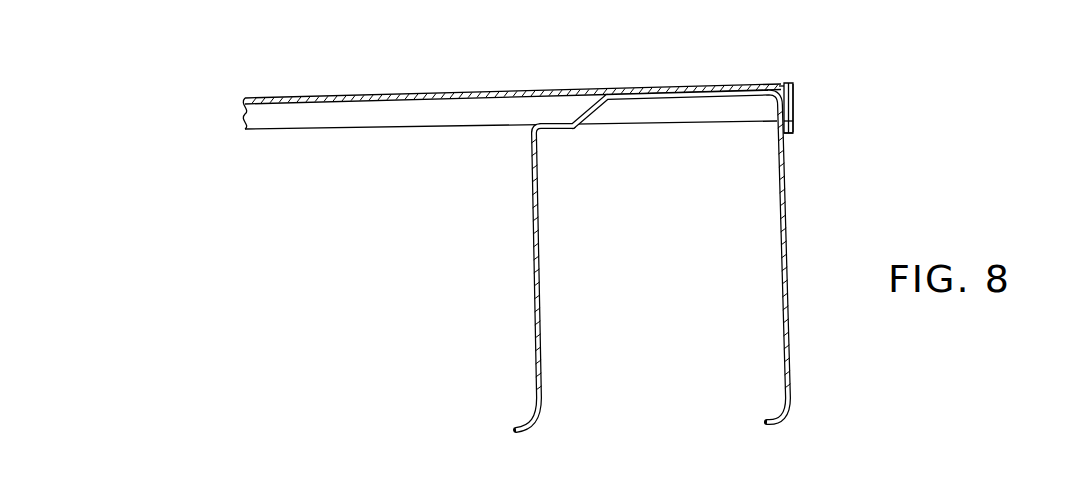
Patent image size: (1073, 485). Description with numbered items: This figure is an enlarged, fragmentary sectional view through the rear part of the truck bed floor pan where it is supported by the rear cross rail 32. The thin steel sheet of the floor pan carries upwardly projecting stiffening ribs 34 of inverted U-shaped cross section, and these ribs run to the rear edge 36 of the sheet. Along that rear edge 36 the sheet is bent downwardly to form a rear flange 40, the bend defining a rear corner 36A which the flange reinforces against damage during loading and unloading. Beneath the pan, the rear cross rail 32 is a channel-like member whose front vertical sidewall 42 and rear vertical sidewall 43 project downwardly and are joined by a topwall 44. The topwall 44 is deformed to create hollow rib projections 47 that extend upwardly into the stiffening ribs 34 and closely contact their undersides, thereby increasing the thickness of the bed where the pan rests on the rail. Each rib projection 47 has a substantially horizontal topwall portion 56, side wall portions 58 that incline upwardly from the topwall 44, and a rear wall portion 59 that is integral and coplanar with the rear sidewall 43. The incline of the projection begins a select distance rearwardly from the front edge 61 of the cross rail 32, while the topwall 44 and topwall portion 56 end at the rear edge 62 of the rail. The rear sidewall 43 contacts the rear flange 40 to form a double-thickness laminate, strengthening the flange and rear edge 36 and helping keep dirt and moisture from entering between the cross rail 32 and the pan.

The rear cross rail 32 is at (788, 217).
The stiffening ribs 34 is at (383, 94).
The rear edge 36 is at (785, 83).
The rear corner 36A is at (793, 88).
The rear flange 40 is at (793, 131).
The front vertical sidewall 42 is at (532, 283).
The rear vertical sidewall 43 is at (782, 296).
The topwall 44 is at (560, 129).
The rib projections 47 is at (653, 100).
The topwall portion 56 is at (671, 90).
The side wall portions 58 is at (585, 92).
The rear wall portion 59 is at (793, 120).
The front edge 61 is at (523, 129).
The rear edge 62 is at (787, 85).